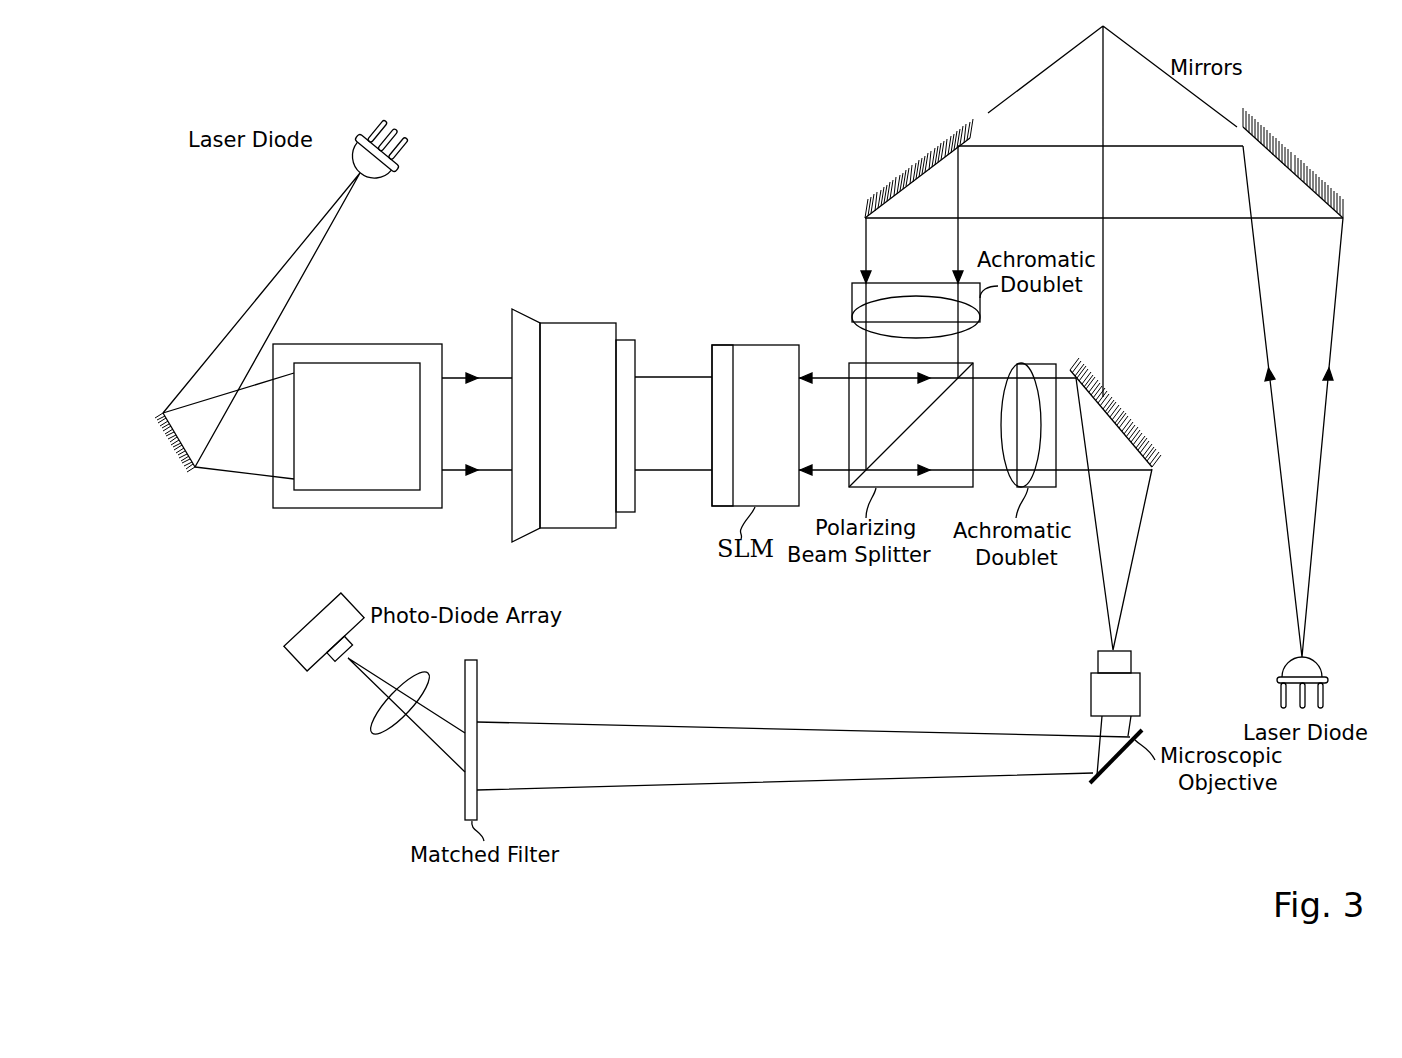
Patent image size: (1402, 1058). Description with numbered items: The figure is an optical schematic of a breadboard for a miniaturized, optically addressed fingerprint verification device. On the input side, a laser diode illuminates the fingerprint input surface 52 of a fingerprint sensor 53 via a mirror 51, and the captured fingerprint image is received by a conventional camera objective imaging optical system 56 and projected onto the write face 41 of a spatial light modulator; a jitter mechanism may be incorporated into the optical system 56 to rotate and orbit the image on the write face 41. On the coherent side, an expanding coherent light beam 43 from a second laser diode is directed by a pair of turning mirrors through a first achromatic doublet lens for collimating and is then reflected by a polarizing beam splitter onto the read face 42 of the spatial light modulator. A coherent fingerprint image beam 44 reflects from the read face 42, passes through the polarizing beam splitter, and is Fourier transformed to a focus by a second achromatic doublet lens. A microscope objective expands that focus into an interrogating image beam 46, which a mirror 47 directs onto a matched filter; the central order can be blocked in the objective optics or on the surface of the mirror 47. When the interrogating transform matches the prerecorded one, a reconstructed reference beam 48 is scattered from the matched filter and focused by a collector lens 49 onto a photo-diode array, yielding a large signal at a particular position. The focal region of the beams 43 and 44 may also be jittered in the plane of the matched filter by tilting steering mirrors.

The write face 41 is at (717, 345).
The read face 42 is at (782, 439).
The expanding coherent light beam 43 is at (822, 380).
The coherent fingerprint image beam 44 is at (883, 380).
The interrogating image beam 46 is at (902, 731).
The mirror 47 is at (1092, 785).
The reconstructed reference beam 48 is at (427, 742).
The collector lens 49 is at (427, 673).
The mirror 51 is at (172, 432).
The fingerprint input surface 52 is at (371, 439).
The fingerprint sensor 53 is at (352, 508).
The camera objective imaging optical system 56 is at (594, 439).